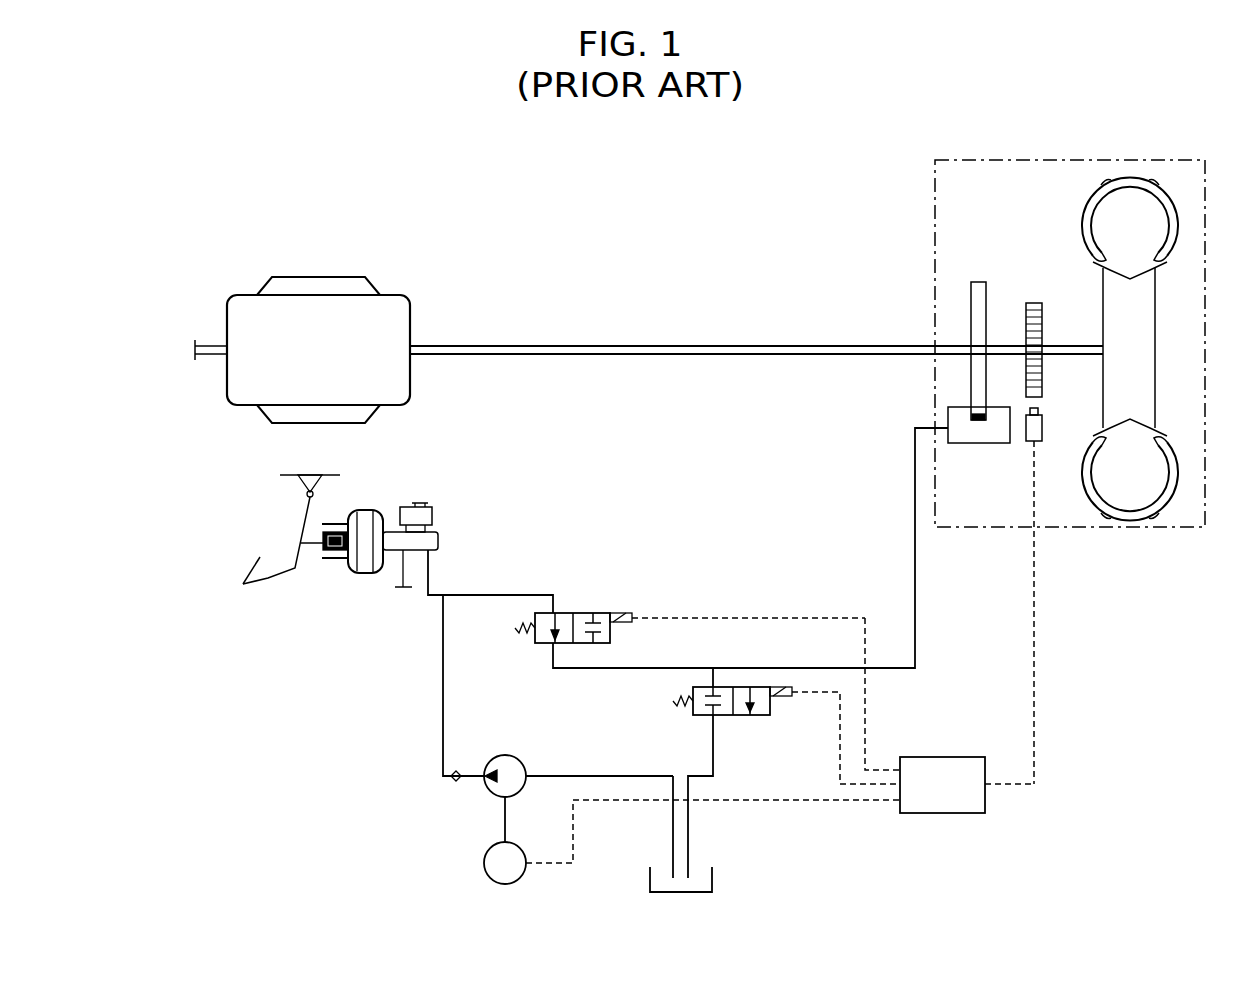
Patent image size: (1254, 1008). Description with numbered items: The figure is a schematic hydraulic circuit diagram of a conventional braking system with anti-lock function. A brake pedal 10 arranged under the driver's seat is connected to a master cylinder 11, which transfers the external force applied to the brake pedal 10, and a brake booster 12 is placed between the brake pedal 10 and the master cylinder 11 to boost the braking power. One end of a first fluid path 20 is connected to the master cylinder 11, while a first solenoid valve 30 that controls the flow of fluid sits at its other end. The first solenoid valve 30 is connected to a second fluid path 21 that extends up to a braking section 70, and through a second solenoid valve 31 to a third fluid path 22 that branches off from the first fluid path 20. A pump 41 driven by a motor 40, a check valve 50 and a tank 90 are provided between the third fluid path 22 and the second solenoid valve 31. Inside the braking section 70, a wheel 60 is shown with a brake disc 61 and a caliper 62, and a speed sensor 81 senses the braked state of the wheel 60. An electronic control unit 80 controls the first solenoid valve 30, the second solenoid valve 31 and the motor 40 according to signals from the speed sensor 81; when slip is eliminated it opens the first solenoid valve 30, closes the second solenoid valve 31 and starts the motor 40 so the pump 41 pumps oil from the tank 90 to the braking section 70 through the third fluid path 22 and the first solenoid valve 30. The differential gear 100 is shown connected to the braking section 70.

The differential gear 100 is at (412, 307).
The braking section 70 is at (1028, 160).
The wheel 60 is at (1128, 511).
The brake disc 61 is at (982, 282).
The brake caliper 62 is at (950, 409).
The speed sensor 81 is at (1031, 442).
The brake pedal 10 is at (302, 530).
The brake booster 12 is at (365, 511).
The master cylinder 11 is at (438, 532).
The first fluid path 20 is at (478, 595).
The third fluid path 22 is at (441, 716).
The second fluid path 21 is at (768, 668).
The first solenoid valve 30 is at (586, 613).
The second solenoid valve 31 is at (735, 716).
The pump 41 is at (512, 757).
The check valve 50 is at (455, 782).
The motor 40 is at (519, 880).
The tank 90 is at (714, 879).
The electronic control unit 80 is at (943, 809).